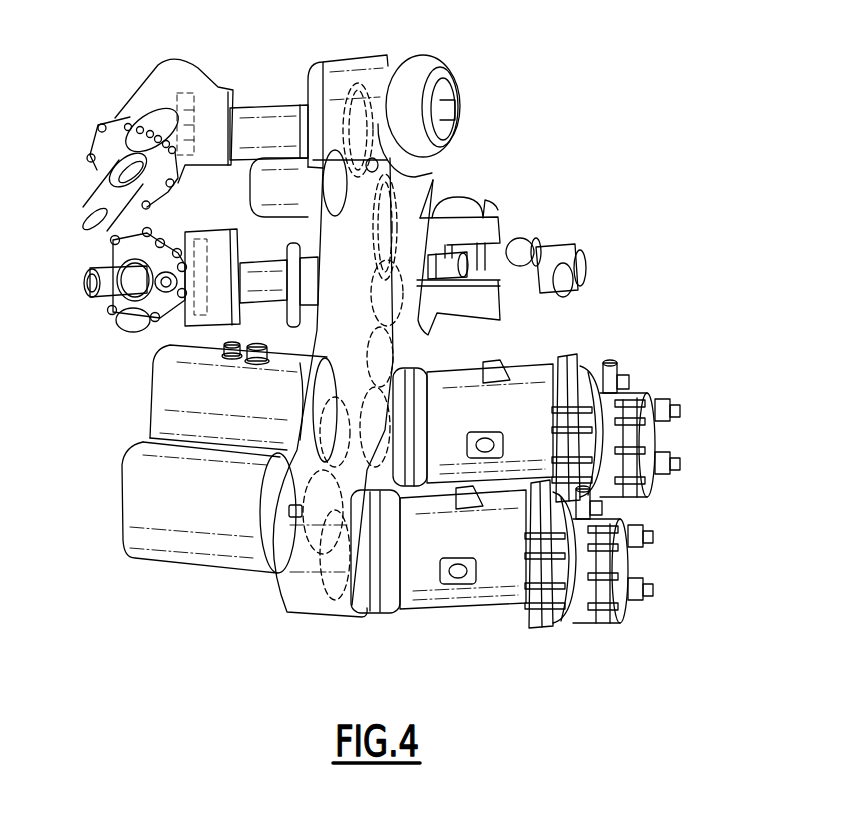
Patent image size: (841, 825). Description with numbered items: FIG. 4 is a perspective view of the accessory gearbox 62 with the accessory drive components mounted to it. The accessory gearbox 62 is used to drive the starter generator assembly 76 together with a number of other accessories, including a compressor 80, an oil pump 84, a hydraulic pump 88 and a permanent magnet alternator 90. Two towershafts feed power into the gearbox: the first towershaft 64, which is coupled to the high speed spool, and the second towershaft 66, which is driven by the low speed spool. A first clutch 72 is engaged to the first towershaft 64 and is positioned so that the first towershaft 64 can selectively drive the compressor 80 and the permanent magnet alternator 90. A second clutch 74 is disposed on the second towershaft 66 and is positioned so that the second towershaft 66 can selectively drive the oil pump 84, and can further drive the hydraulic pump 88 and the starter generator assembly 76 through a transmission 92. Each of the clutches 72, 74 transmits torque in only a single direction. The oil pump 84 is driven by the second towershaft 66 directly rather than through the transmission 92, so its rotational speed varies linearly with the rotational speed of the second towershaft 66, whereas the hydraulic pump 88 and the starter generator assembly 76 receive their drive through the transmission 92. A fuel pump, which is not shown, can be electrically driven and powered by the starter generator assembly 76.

The accessory gearbox 62 is at (360, 77).
The first towershaft 64 is at (95, 205).
The second towershaft 66 is at (110, 300).
The first clutch 72 is at (370, 193).
The second clutch 74 is at (237, 292).
The starter generator assembly 76 is at (688, 505).
The compressor 80 is at (438, 72).
The oil pump 84 is at (570, 262).
The hydraulic pump 88 is at (140, 528).
The permanent magnet alternator 90 is at (250, 188).
The transmission 92 is at (160, 398).